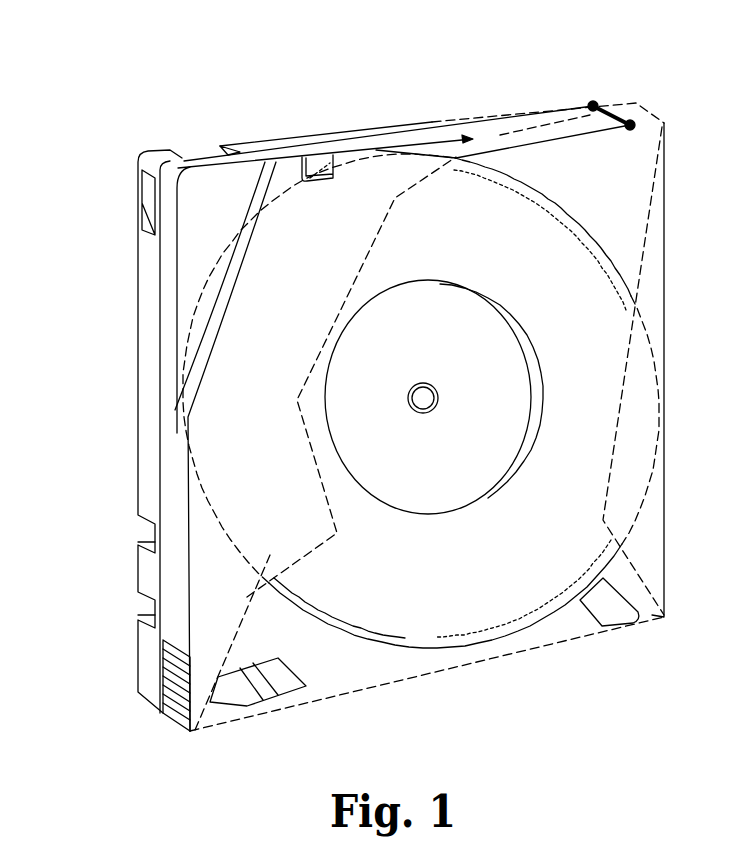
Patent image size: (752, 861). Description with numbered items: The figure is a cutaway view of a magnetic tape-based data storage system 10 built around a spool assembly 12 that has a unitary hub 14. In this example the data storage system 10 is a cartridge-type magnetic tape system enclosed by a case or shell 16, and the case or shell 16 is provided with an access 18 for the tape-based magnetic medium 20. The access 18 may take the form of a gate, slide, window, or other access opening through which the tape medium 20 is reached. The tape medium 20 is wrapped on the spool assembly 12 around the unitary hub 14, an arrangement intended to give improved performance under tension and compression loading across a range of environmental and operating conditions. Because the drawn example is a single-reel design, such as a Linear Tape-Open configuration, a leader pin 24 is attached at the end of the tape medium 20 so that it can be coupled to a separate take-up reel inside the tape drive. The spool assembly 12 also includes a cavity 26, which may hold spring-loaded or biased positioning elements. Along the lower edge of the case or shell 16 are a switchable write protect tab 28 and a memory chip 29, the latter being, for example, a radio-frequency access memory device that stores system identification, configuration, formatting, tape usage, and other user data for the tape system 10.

The magnetic tape-based data storage system 10 is at (98, 142).
The spool assembly 12 is at (598, 208).
The unitary hub 14 is at (453, 513).
The case or shell 16 is at (148, 333).
The access 18 is at (558, 74).
The tape-based magnetic medium 20 is at (508, 125).
The leader pin 24 is at (613, 104).
The cavity 26 is at (495, 419).
The write protect tab 28 is at (282, 686).
The memory chip 29 is at (616, 612).